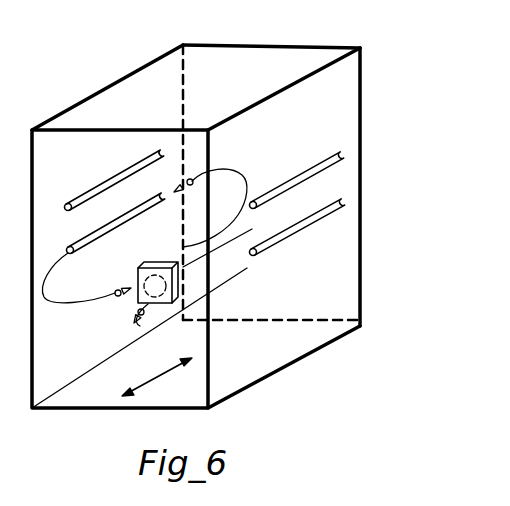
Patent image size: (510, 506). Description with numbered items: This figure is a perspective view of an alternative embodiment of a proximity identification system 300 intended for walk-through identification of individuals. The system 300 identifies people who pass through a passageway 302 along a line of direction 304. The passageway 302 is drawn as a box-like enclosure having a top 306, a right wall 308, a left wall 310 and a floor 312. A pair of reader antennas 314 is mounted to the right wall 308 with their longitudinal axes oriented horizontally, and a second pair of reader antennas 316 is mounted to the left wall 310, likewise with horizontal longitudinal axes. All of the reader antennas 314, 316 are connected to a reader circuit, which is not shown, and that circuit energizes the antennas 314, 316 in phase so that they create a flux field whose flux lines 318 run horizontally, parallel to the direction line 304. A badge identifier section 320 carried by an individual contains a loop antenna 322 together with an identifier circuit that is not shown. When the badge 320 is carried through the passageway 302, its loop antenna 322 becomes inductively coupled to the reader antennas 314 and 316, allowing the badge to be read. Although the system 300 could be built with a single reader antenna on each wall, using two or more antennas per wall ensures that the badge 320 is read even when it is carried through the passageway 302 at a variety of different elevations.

The proximity identification system 300 is at (117, 421).
The passageway 302 is at (287, 26).
The line of direction 304 is at (144, 384).
The top 306 is at (249, 92).
The right wall 308 is at (360, 109).
The left wall 310 is at (112, 84).
The floor 312 is at (276, 362).
The reader antennas 314 is at (342, 153).
The reader antennas 316 is at (86, 238).
The flux lines 318 is at (252, 164).
The badge identifier section 320 is at (137, 284).
The loop antenna 322 is at (157, 270).